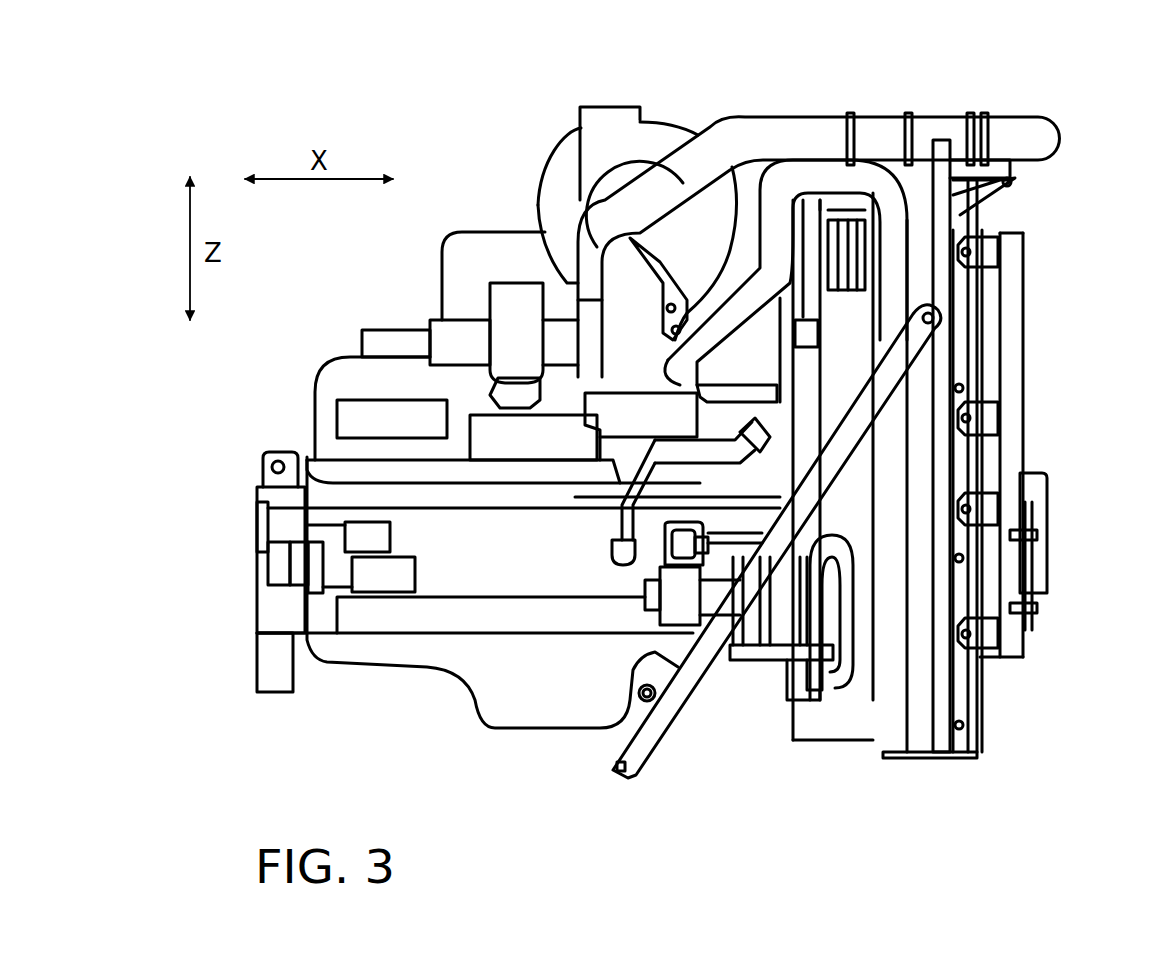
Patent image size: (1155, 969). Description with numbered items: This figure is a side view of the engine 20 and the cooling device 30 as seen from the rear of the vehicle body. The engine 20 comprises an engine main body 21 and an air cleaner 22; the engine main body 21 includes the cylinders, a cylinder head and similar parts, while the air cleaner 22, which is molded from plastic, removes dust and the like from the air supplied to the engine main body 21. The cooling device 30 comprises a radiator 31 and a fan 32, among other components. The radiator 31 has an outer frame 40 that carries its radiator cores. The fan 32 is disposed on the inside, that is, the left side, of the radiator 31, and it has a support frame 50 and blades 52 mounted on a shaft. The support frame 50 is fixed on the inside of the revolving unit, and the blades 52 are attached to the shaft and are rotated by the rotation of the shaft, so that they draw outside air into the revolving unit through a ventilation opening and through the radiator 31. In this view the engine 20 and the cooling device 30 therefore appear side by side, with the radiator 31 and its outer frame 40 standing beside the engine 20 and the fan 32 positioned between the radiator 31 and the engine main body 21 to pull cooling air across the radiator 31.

The engine 20 is at (498, 203).
The engine main body 21 is at (420, 495).
The air cleaner 22 is at (548, 165).
The cooling device 30 is at (822, 140).
The radiator 31 is at (888, 208).
The fan 32 is at (823, 178).
The outer frame 40 is at (892, 460).
The support frame 50 is at (760, 560).
The blades 52 is at (837, 685).